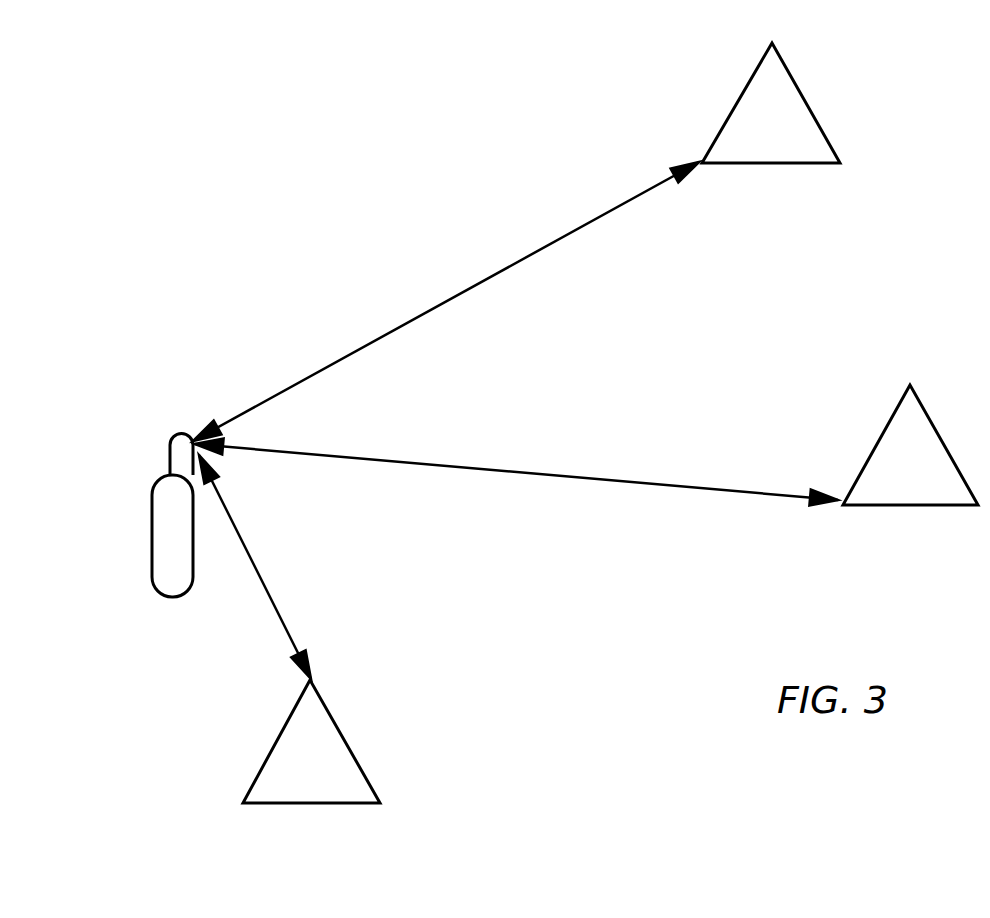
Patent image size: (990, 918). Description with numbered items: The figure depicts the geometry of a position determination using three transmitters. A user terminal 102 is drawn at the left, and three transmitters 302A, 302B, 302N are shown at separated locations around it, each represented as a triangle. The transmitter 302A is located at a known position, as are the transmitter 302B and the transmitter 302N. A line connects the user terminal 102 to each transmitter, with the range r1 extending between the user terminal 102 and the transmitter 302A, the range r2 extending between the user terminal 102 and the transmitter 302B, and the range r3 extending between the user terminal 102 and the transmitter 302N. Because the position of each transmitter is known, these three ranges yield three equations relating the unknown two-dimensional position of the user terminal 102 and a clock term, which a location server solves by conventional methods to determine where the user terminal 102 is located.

The user terminal 102 is at (152, 533).
The transmitter 302A is at (771, 103).
The transmitter 302B is at (910, 445).
The transmitter 302N is at (311, 741).
The range r1 is at (446, 301).
The range r2 is at (516, 472).
The range r3 is at (255, 567).